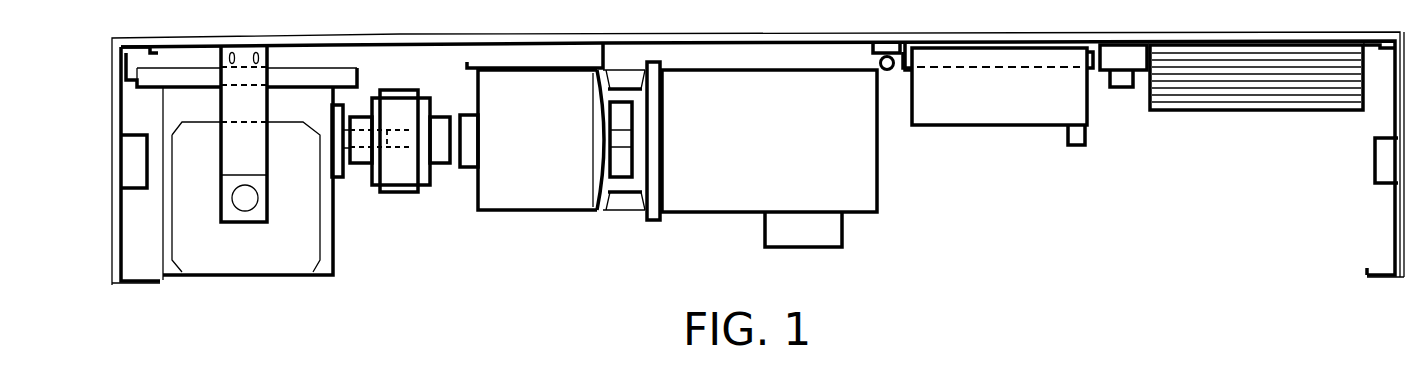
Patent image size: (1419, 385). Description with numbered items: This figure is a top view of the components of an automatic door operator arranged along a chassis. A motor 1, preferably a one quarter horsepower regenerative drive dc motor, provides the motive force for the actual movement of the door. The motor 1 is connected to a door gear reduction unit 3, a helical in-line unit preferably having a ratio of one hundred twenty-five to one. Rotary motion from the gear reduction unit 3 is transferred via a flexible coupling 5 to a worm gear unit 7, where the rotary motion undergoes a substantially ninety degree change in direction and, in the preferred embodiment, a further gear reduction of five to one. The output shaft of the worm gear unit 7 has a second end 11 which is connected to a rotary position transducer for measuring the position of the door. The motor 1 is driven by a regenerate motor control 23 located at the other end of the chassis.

The motor 1 is at (853, 190).
The door gear reduction unit 3 is at (540, 212).
The flexible coupling 5 is at (399, 193).
The worm gear unit 7 is at (240, 277).
The second end of the output shaft 11 is at (245, 206).
The regenerate motor control 23 is at (1253, 112).